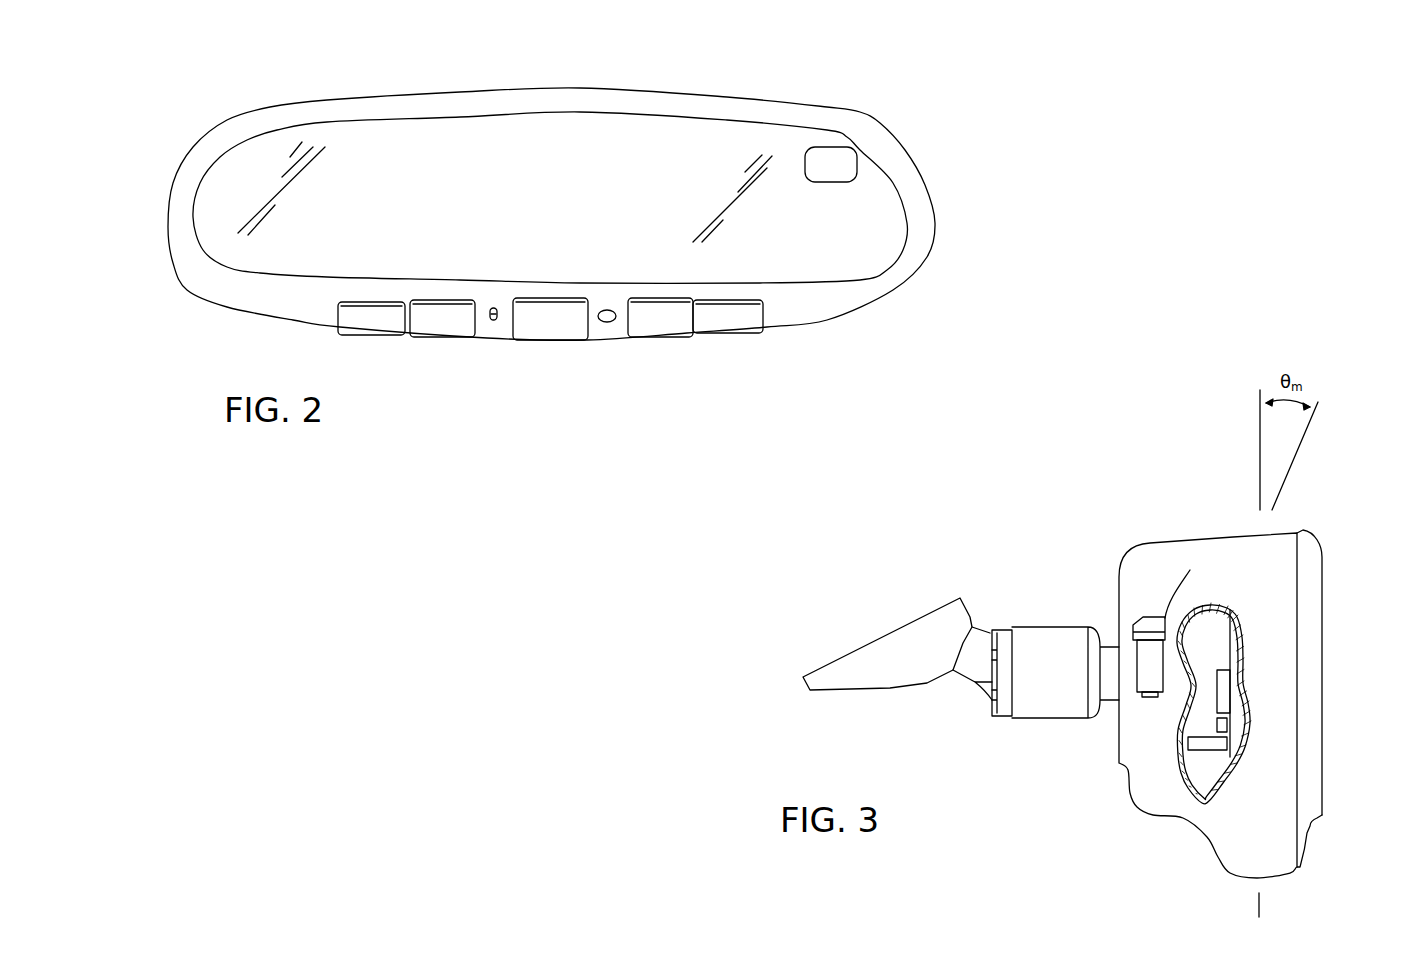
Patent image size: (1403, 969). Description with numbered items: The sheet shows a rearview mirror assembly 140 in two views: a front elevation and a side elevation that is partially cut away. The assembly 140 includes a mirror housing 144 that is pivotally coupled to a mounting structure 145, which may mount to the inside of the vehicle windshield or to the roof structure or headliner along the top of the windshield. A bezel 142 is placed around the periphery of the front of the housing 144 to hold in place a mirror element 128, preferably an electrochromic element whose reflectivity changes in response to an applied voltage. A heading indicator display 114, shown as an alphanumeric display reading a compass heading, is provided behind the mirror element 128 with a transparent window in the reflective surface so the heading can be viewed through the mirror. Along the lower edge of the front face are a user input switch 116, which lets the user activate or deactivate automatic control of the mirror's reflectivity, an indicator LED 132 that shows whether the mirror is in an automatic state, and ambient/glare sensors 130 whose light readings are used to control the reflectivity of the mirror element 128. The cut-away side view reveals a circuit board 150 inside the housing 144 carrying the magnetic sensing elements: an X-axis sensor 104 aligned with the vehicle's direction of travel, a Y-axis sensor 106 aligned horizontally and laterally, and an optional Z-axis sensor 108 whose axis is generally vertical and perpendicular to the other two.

In FIG. 2, the rearview mirror assembly 140 is at (583, 232).
In FIG. 3, the rearview mirror assembly 140 is at (1212, 506).
In FIG. 2, the bezel 142 is at (325, 113).
In FIG. 3, the bezel 142 is at (1310, 553).
In FIG. 2, the mirror element 128 is at (892, 217).
In FIG. 2, the heading indicator display 114 is at (847, 147).
In FIG. 2, the user input switch 116 is at (667, 338).
In FIG. 3, the user input switch 116 is at (1313, 828).
In FIG. 2, the indicator LED 132 is at (497, 320).
In FIG. 2, the ambient/glare sensors 130 is at (615, 318).
In FIG. 3, the mirror housing 144 is at (1138, 562).
In FIG. 3, the mounting structure 145 is at (957, 570).
In FIG. 3, the circuit board 150 is at (1232, 652).
In FIG. 3, the Z-axis sensor 108 is at (1225, 685).
In FIG. 3, the Y-axis sensor 106 is at (1227, 723).
In FIG. 3, the X-axis sensor 104 is at (1213, 747).